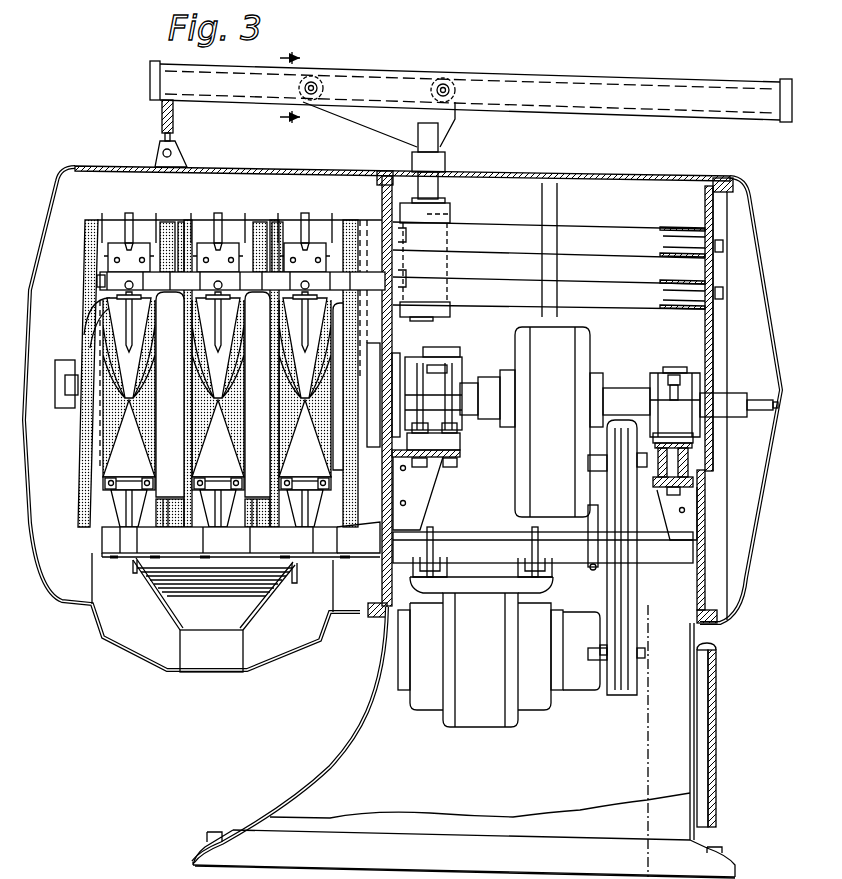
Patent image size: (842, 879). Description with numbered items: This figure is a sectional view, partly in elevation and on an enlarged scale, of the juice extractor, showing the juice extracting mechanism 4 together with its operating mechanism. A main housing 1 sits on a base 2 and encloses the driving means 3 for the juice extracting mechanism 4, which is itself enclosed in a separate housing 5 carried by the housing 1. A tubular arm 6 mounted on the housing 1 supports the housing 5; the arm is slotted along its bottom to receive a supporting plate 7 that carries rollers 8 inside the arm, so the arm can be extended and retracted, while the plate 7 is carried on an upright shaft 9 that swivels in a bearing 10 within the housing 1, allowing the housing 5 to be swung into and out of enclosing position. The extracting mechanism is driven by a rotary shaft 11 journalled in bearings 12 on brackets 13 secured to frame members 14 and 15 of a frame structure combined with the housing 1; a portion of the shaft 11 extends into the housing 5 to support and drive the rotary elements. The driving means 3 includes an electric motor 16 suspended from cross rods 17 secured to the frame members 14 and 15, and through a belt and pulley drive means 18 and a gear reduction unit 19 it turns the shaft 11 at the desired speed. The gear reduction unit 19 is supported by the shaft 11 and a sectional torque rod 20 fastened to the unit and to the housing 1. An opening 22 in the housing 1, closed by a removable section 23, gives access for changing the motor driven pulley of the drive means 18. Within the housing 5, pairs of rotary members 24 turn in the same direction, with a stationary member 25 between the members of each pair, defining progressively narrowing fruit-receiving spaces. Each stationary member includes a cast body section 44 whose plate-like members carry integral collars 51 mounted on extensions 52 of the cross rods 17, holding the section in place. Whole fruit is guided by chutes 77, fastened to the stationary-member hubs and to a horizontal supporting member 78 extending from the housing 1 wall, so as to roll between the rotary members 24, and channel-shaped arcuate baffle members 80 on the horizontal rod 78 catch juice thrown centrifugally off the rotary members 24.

The main housing 1 is at (370, 705).
The base 2 is at (370, 860).
The driving means 3 is at (597, 702).
The juice extracting mechanism 4 is at (73, 505).
The housing 5 is at (62, 155).
The arm 6 is at (524, 90).
The supporting plate 7 is at (442, 128).
The rollers 8 is at (449, 84).
The upright shaft 9 is at (432, 192).
The bearing 10 is at (449, 215).
The rotary shaft 11 is at (620, 386).
The bearings 12 is at (436, 360).
The brackets 13 is at (435, 460).
The frame member 14 is at (382, 350).
The frame member 15 is at (706, 508).
The electric motor 16 is at (473, 712).
The cross rods 17 is at (488, 553).
The belt and pulley drive means 18 is at (632, 607).
The gear reduction unit 19 is at (582, 352).
The sectional torque rod 20 is at (598, 549).
The opening 22 is at (700, 690).
The removable section 23 is at (716, 715).
The rotary members 24 is at (146, 406).
The stationary members 25 is at (110, 465).
The body section 44 is at (221, 515).
The collars 51 is at (124, 545).
The extensions 52 is at (160, 545).
The chutes 77 is at (139, 252).
The horizontal supporting member 78 is at (99, 280).
The baffle members 80 is at (90, 455).